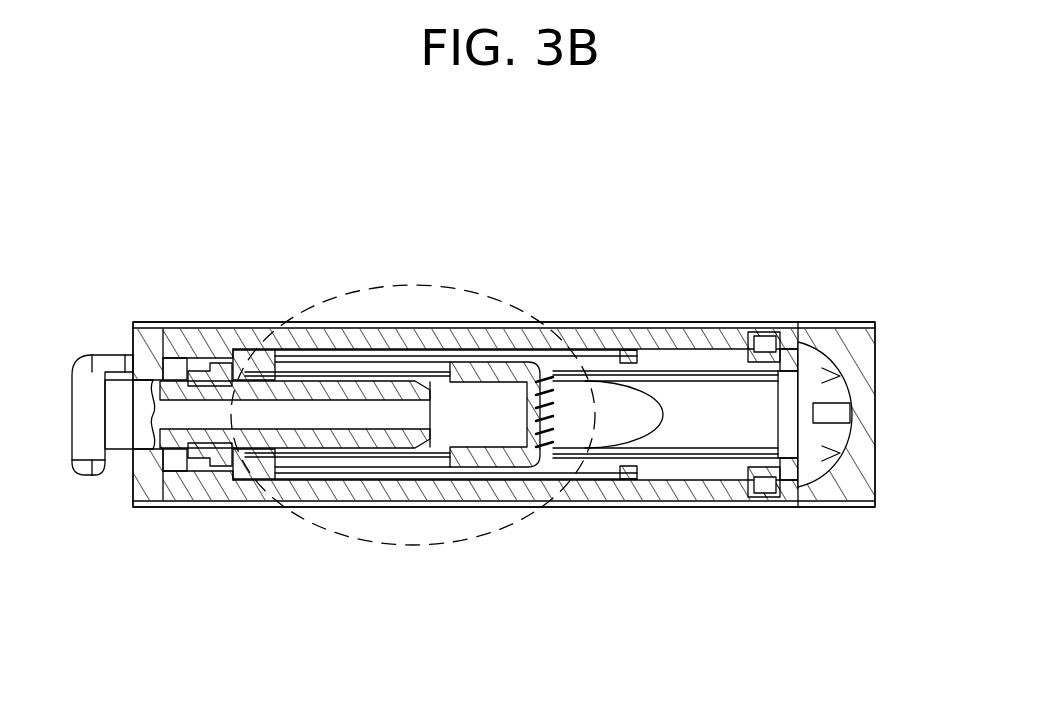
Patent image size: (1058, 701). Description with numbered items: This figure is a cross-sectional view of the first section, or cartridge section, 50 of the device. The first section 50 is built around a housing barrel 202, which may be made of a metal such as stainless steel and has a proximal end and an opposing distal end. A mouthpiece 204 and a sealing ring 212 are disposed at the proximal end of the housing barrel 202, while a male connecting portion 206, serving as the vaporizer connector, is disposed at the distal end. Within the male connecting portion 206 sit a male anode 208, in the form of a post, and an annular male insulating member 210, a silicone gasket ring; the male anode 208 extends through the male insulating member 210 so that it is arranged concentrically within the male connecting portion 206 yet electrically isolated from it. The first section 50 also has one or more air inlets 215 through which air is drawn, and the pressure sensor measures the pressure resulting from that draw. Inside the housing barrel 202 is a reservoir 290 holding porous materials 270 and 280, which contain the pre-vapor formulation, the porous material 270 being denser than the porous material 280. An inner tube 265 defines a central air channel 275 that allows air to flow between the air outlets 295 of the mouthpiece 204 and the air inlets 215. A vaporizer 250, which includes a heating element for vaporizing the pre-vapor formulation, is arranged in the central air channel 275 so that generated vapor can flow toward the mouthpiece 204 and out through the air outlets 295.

The first section 50 is at (514, 172).
The housing barrel 202 is at (395, 507).
The mouthpiece 204 is at (873, 498).
The male connecting portion 206 is at (102, 352).
The male anode 208 is at (183, 372).
The male insulating member 210 is at (228, 385).
The sealing ring 212 is at (770, 472).
The air inlets 215 is at (178, 352).
The vaporizer 250 is at (553, 368).
The inner tube 265 is at (735, 357).
The porous material 270 is at (608, 470).
The central air channel 275 is at (680, 400).
The porous material 280 is at (698, 472).
The reservoir 290 is at (482, 475).
The air outlets 295 is at (873, 450).